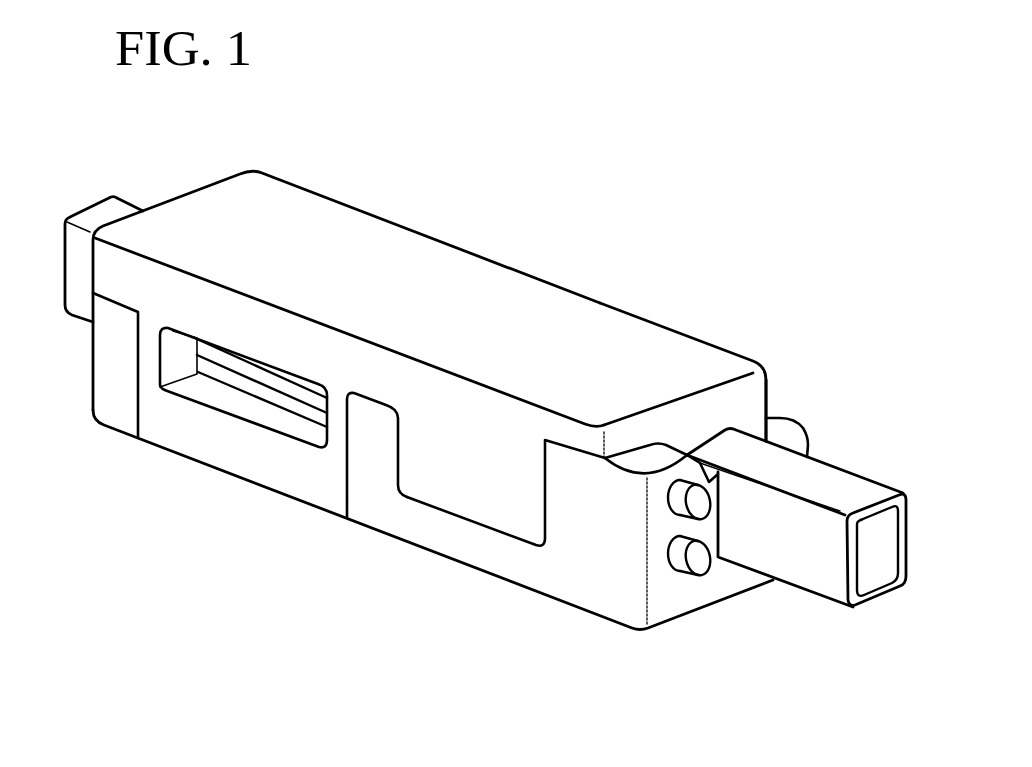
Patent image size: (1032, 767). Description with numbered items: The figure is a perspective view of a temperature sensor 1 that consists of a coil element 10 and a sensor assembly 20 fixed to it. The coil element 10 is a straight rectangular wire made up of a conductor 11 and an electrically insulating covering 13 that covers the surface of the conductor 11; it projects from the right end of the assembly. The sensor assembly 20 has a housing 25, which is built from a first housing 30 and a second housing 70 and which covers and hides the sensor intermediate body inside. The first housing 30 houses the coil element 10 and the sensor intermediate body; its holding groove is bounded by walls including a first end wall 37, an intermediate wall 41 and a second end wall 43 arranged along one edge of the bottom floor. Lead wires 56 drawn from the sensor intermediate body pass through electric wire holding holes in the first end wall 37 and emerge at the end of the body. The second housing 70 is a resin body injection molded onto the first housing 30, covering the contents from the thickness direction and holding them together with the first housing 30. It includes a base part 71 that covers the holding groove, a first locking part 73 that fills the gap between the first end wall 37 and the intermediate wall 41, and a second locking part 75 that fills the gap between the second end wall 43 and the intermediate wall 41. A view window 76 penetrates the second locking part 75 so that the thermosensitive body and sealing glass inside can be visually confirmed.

The temperature sensor 1 is at (684, 156).
The sensor assembly 20 is at (476, 252).
The base part 71 is at (553, 314).
The housing 25 is at (697, 223).
The second housing 70 is at (691, 328).
The first housing 30 is at (779, 410).
The coil element 10 is at (843, 396).
The electrically insulating covering 13 is at (840, 468).
The conductor 11 is at (883, 545).
The second end wall 43 is at (90, 357).
The first end wall 37 is at (587, 610).
The second locking part 75 is at (243, 483).
The view window 76 is at (217, 404).
The intermediate wall 41 is at (343, 458).
The first locking part 73 is at (473, 520).
The lead wires 56 is at (675, 504).